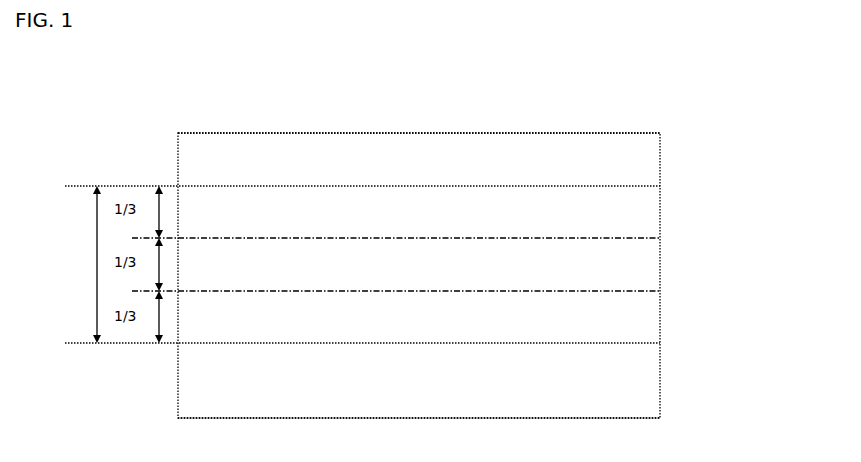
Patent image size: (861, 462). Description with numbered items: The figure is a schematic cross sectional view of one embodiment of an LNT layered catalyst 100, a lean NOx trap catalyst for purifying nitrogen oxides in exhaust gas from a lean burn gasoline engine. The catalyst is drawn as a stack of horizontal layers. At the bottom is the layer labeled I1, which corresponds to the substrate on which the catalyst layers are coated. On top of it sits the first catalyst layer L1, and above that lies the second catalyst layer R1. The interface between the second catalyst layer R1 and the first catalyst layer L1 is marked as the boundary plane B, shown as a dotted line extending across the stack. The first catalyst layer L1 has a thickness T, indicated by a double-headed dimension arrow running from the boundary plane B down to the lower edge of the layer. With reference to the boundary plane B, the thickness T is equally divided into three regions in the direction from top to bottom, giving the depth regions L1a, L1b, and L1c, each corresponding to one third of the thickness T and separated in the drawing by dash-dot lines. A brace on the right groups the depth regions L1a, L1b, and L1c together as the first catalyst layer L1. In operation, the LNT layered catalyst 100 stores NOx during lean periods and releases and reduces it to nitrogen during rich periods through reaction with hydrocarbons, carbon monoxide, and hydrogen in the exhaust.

The LNT layered catalyst 100 is at (443, 81).
The second catalyst layer R1 is at (660, 153).
The depth region L1a is at (643, 221).
The depth region L1b is at (643, 270).
The depth region L1c is at (643, 325).
The first catalyst layer L1 is at (781, 187).
The layer I1 is at (660, 372).
The boundary plane B is at (352, 260).
The thickness T is at (83, 264).